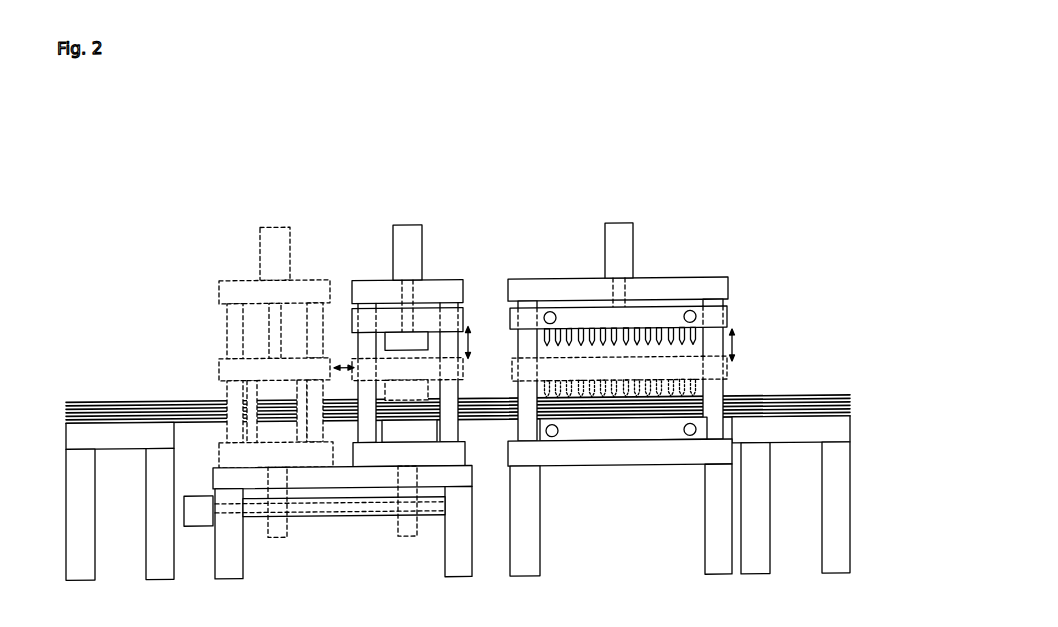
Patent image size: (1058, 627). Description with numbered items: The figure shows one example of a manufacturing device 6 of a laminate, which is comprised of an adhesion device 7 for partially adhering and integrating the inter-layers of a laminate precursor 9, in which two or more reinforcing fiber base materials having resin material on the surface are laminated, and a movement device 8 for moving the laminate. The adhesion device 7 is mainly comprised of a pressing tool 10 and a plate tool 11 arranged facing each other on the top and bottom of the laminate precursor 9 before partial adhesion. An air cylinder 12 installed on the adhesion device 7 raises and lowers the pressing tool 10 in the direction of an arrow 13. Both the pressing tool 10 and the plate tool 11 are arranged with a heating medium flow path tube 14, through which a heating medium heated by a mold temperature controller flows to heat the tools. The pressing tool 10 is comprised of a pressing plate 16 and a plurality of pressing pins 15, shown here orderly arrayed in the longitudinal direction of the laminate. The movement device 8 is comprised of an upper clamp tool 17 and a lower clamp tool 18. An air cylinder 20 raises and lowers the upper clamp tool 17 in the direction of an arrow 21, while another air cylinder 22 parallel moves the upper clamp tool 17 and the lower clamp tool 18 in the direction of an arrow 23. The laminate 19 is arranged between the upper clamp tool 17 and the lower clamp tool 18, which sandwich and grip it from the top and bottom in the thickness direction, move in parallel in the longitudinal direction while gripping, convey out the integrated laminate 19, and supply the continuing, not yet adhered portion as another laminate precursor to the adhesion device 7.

The manufacturing device 6 is at (497, 170).
The adhesion device 7 is at (735, 189).
The movement device 8 is at (473, 186).
The laminate precursor 9 is at (822, 406).
The pressing tool 10 is at (752, 312).
The plate tool 11 is at (639, 432).
The air cylinder 12 is at (613, 249).
The arrow 13 is at (733, 357).
The heating medium flow path tube 14 is at (551, 320).
The pressing pins 15 is at (696, 349).
The pressing plate 16 is at (727, 312).
The upper clamp tool 17 is at (411, 347).
The lower clamp tool 18 is at (410, 432).
The laminate 19 is at (488, 405).
The air cylinder 20 is at (400, 252).
The arrow 21 is at (466, 336).
The air cylinder 22 is at (201, 510).
The arrow 23 is at (346, 376).